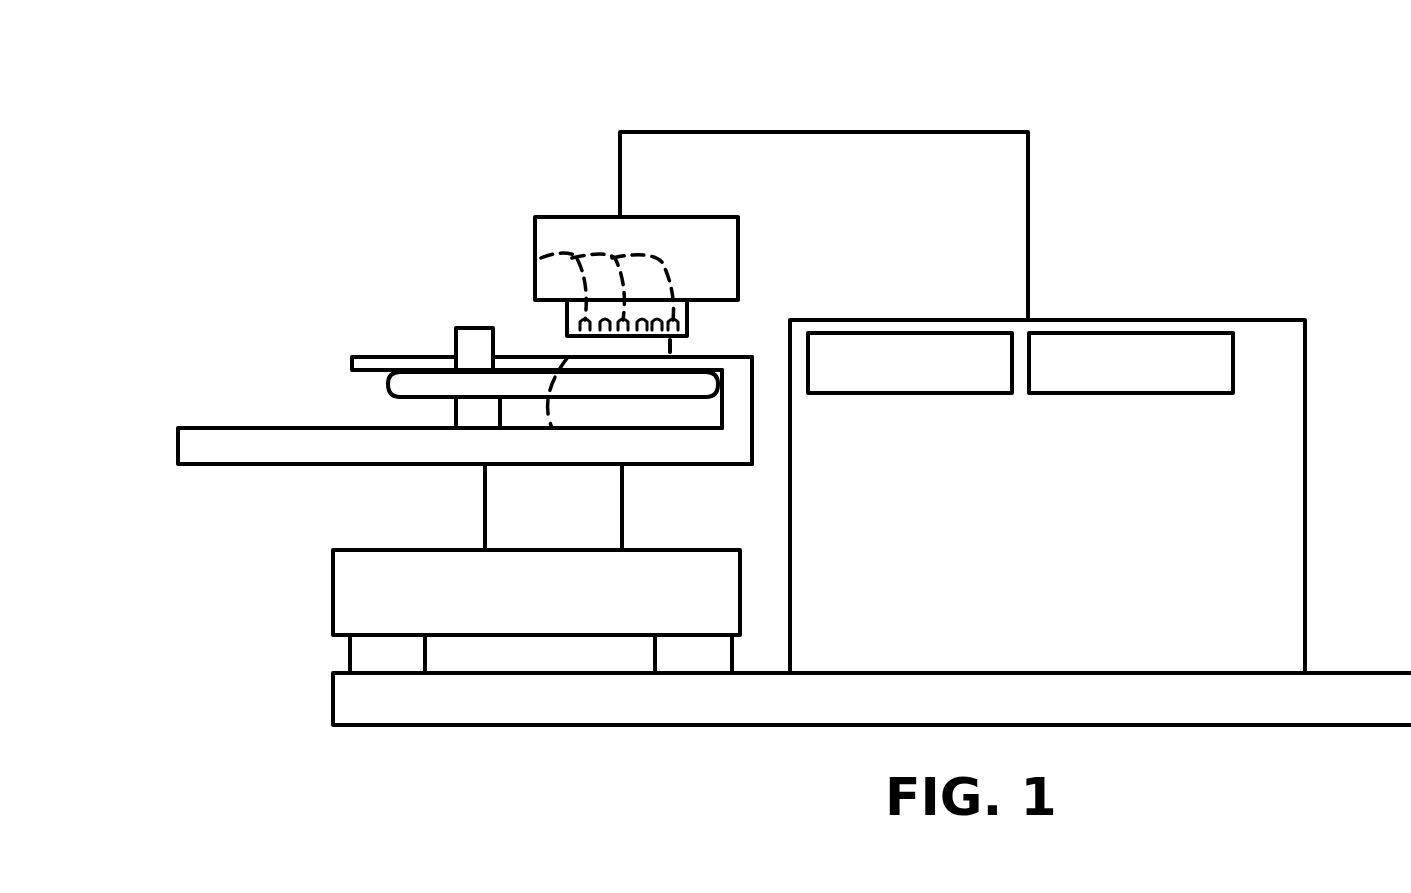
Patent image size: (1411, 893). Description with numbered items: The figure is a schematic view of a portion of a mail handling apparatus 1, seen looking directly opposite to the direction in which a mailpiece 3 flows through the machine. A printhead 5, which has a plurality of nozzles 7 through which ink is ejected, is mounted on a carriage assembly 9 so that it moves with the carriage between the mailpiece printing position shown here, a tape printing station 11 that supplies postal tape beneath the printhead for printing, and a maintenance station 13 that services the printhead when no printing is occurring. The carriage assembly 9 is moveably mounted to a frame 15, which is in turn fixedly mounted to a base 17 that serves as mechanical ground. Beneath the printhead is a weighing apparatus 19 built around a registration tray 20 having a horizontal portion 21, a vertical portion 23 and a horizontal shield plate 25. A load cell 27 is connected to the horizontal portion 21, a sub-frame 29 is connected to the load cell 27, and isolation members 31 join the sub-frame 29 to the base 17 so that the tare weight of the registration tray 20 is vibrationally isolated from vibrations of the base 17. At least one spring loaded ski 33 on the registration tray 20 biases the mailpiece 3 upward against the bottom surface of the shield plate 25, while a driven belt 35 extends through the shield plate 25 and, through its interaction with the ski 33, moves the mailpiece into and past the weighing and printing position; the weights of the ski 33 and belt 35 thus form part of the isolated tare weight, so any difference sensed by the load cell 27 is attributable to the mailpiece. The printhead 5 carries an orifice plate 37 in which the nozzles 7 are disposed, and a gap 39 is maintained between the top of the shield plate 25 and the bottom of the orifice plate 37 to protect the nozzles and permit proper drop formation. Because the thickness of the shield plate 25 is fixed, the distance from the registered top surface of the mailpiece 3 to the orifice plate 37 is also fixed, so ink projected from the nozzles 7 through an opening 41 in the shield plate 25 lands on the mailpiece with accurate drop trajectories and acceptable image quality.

The mail handling apparatus 1 is at (482, 128).
The mailpiece 3 is at (390, 383).
The printhead 5 is at (583, 217).
The nozzles 7 is at (541, 258).
The carriage assembly 9 is at (832, 132).
The tape printing station 11 is at (890, 378).
The maintenance station 13 is at (1117, 380).
The frame 15 is at (1192, 320).
The base 17 is at (1368, 673).
The weighing apparatus 19 is at (389, 321).
The registration tray 20 is at (197, 426).
The horizontal portion 21 is at (330, 452).
The vertical portion 23 is at (748, 418).
The shield plate 25 is at (361, 357).
The load cell 27 is at (503, 516).
The sub-frame 29 is at (348, 607).
The isolation members 31 is at (352, 663).
The spring loaded ski 33 is at (455, 412).
The belt 35 is at (463, 328).
The orifice plate 37 is at (688, 315).
The gap 39 is at (680, 348).
The opening 41 is at (556, 428).